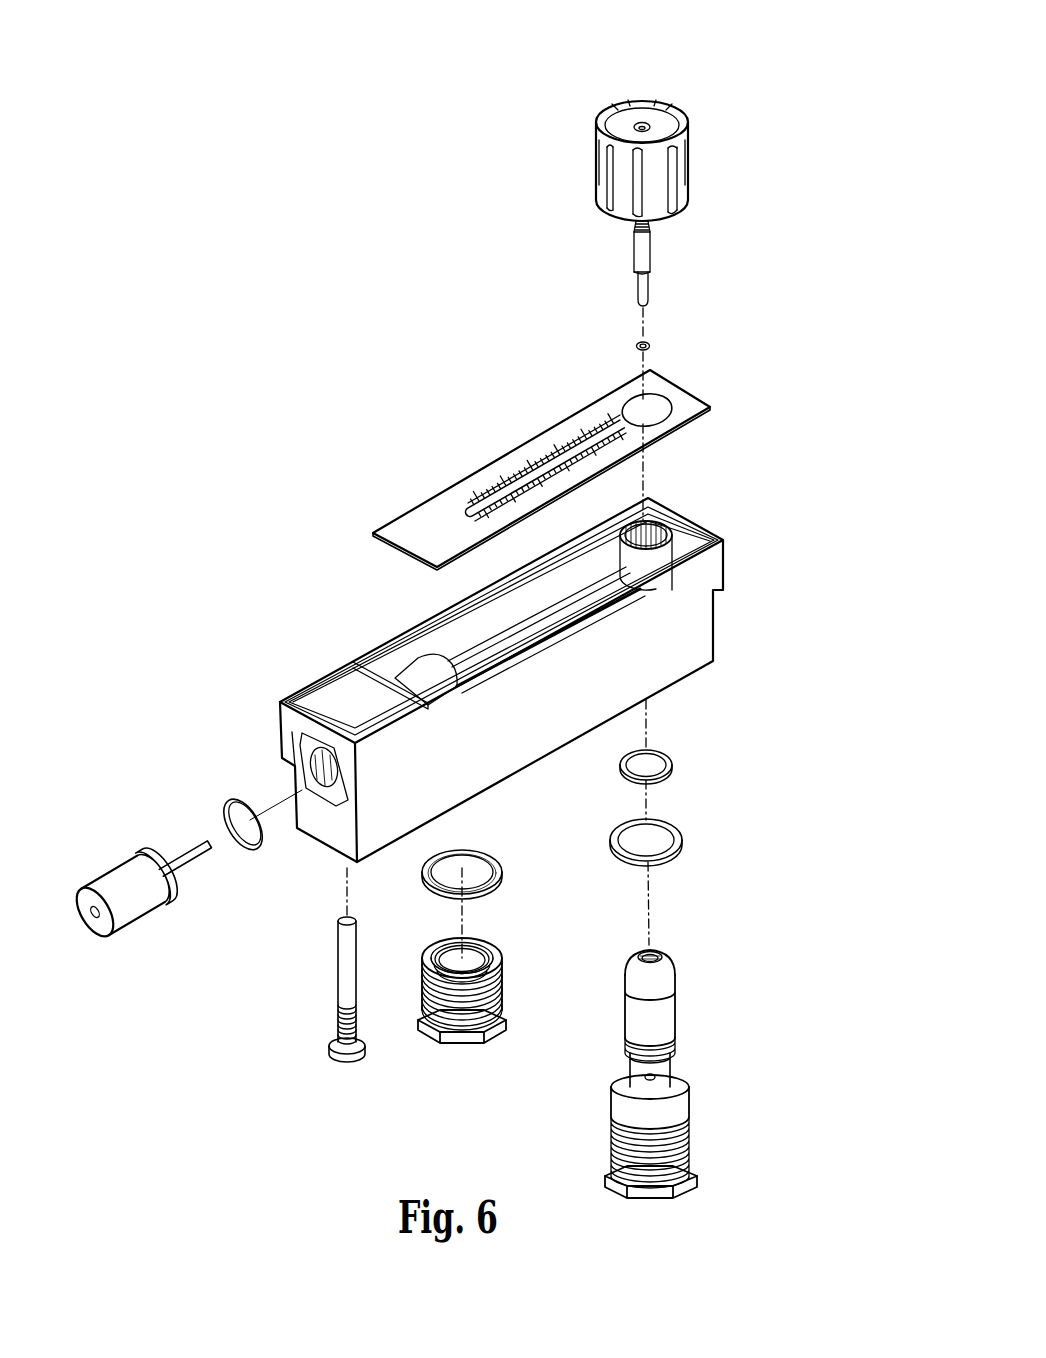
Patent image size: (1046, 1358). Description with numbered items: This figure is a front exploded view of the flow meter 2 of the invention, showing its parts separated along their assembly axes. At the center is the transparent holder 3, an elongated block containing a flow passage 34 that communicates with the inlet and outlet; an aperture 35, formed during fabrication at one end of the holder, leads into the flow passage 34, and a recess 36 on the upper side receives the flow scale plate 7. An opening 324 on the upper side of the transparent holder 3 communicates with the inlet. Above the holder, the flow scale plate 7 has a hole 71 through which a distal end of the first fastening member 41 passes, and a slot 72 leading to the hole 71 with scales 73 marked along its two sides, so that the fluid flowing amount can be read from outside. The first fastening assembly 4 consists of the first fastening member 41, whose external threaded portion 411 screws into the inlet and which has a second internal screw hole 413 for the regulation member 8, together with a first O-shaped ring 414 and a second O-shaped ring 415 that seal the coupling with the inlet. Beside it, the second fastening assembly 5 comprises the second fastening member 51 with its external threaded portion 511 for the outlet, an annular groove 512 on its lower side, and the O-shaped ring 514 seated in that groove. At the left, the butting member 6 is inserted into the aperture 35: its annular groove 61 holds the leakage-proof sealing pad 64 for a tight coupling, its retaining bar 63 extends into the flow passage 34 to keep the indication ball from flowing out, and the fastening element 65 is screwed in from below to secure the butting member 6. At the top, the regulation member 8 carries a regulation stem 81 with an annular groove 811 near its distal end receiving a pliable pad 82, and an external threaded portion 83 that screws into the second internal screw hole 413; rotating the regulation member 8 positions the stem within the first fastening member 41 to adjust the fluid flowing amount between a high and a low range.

The flow meter 2 is at (410, 364).
The transparent holder 3 is at (712, 582).
The flow passage 34 is at (570, 603).
The aperture 35 is at (302, 782).
The recess 36 is at (700, 530).
The opening 324 is at (656, 522).
The first fastening assembly 4 is at (786, 798).
The first fastening member 41 is at (699, 1050).
The external threaded portion 411 is at (685, 1122).
The second internal screw hole 413 is at (662, 952).
The first O-shaped ring 414 is at (684, 842).
The second O-shaped ring 415 is at (674, 770).
The second fastening assembly 5 is at (559, 868).
The second fastening member 51 is at (416, 1044).
The external threaded portion 511 is at (424, 981).
The annular groove 512 is at (484, 1026).
The O-shaped ring 514 is at (488, 873).
The butting member 6 is at (220, 797).
The annular groove 61 is at (162, 898).
The retaining bar 63 is at (186, 862).
The leakage-proof sealing pad 64 is at (252, 848).
The fastening element 65 is at (346, 966).
The flow scale plate 7 is at (447, 497).
The hole 71 is at (624, 404).
The slot 72 is at (490, 479).
The scales 73 is at (530, 456).
The regulation member 8 is at (692, 94).
The regulation stem 81 is at (655, 266).
The annular groove 811 is at (638, 272).
The pliable pad 82 is at (650, 346).
The external threaded portion 83 is at (654, 232).